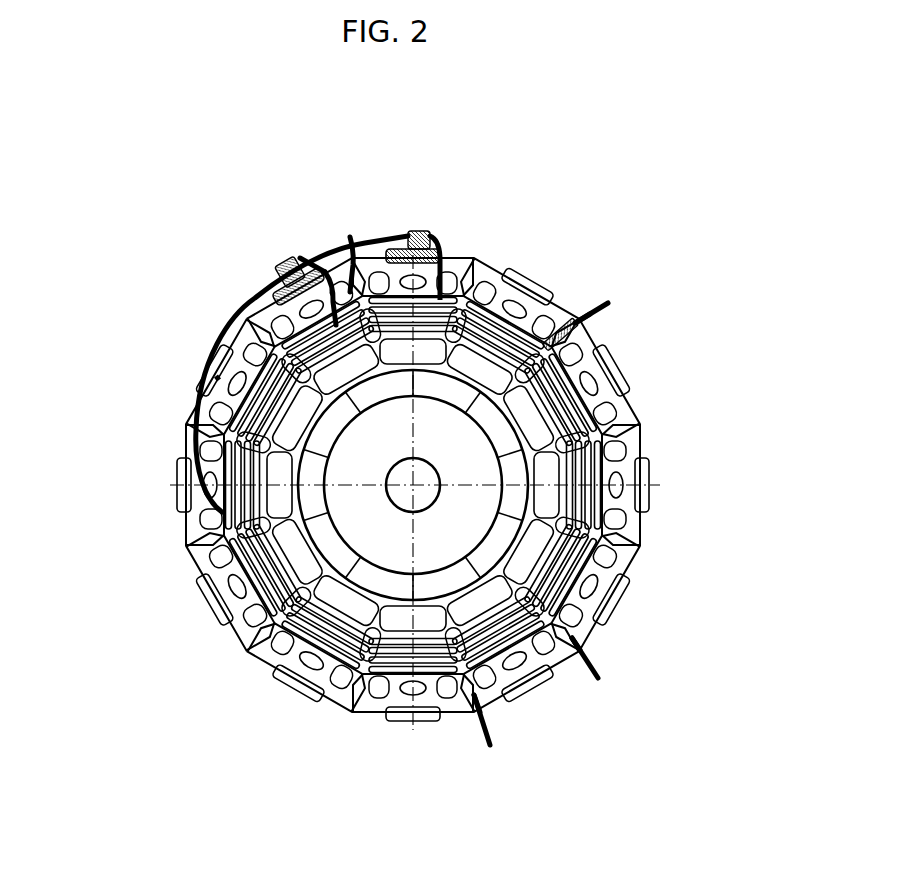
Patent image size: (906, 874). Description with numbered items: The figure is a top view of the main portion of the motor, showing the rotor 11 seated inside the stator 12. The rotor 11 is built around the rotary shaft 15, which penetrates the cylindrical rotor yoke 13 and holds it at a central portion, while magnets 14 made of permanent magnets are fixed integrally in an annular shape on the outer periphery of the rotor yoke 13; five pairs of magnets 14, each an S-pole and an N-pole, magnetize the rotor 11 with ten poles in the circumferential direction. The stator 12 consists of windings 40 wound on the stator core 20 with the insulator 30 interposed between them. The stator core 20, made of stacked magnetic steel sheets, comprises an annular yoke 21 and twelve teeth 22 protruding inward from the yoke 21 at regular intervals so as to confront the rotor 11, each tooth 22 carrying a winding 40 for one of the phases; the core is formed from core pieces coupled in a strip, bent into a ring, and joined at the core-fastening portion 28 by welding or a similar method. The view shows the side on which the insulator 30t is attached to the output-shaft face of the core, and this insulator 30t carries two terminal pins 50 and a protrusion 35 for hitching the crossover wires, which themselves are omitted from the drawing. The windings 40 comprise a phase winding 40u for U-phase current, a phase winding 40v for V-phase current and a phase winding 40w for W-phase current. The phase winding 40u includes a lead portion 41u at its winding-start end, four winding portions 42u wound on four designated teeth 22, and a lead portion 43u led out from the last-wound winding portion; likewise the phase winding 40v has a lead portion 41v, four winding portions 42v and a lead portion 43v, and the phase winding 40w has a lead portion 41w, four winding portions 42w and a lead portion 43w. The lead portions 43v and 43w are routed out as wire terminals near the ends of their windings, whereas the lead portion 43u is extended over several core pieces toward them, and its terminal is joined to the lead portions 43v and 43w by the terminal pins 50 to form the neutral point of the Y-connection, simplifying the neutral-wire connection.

The rotor 11 is at (393, 604).
The stator 12 is at (404, 476).
The rotor yoke 13 is at (376, 557).
The magnets 14 is at (398, 592).
The rotary shaft 15 is at (400, 494).
The stator core 20 is at (337, 510).
The yoke 21 is at (200, 519).
The teeth 22 is at (185, 550).
The core-fastening portion 28 is at (565, 328).
The insulator 30 is at (468, 499).
The insulator (output-shaft side) 30t is at (636, 453).
The protrusion 35 is at (613, 442).
The windings 40 is at (410, 476).
The phase winding (U phase) 40u is at (238, 322).
The phase winding (V phase) 40v is at (332, 246).
The phase winding (W phase) 40w is at (443, 238).
The lead portion (winding-start end of U phase) 41u is at (586, 312).
The lead portion (winding-start end of V phase) 41v is at (584, 655).
The lead portion (winding-start end of W phase) 41w is at (481, 732).
The winding portions (U phase) 42u is at (567, 372).
The winding portions (V phase) 42v is at (483, 657).
The winding portions (W phase) 42w is at (450, 663).
The lead portion (winding-finish end of U phase) 43u is at (217, 377).
The lead portion (winding-finish end of V phase) 43v is at (351, 255).
The lead portion (winding-finish end of W phase) 43w is at (443, 262).
The terminal pins 50 is at (288, 258).